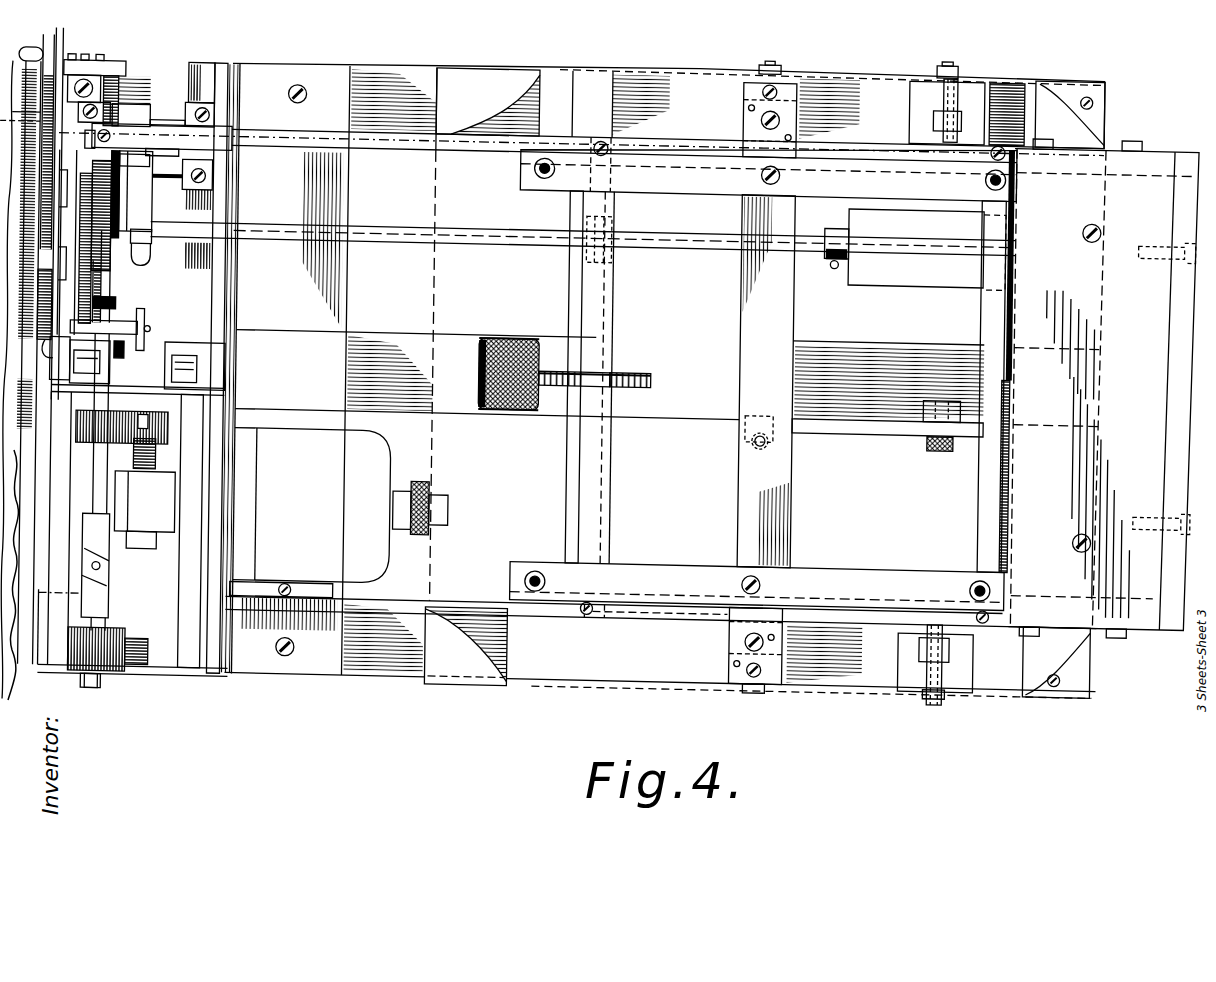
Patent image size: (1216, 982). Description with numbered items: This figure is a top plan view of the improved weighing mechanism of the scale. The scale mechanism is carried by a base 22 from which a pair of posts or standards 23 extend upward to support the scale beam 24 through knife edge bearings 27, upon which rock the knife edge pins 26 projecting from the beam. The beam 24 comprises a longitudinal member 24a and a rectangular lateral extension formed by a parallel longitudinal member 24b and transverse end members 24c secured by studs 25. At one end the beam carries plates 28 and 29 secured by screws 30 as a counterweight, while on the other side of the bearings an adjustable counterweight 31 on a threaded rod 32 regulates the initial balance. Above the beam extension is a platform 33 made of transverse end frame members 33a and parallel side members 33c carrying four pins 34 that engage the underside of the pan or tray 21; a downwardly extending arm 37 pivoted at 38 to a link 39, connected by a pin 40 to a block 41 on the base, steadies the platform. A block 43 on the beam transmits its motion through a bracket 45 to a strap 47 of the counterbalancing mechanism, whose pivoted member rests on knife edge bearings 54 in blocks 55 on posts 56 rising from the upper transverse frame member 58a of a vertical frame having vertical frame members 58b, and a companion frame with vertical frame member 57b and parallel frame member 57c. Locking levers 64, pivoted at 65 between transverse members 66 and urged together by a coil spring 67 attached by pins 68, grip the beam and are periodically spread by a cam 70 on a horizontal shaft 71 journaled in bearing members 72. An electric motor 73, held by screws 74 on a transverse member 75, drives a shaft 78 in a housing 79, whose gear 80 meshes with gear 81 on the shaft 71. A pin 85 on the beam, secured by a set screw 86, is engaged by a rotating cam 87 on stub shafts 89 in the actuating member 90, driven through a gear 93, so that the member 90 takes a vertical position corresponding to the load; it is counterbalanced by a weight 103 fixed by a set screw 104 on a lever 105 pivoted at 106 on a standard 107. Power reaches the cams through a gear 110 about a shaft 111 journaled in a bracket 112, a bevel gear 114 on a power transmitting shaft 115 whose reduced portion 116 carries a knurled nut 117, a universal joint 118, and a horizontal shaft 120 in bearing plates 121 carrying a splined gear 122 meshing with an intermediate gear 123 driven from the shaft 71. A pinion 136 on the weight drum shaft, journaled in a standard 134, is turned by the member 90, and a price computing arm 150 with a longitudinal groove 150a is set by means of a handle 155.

The pan or tray 21 is at (495, 66).
The base 22 is at (396, 675).
The posts or standards 23 is at (940, 87).
The scale beam 24 is at (600, 121).
The longitudinal member 24a is at (411, 150).
The parallel longitudinal member 24b is at (636, 612).
The transverse end members 24c is at (986, 508).
The studs 25 is at (609, 135).
The knife edge pins or bearing members 26 is at (941, 136).
The knife edge bearings 27 is at (944, 123).
The plate 28 is at (1087, 389).
The plate 29 is at (1180, 426).
The screws 30 is at (1170, 240).
The adjustable counterweight 31 is at (510, 332).
The rod 32 is at (650, 364).
The platform 33 is at (739, 193).
The transverse end frame members 33a is at (797, 73).
The parallel side members 33c is at (692, 149).
The pins 34 is at (537, 167).
The downwardly extending arm 37 is at (782, 439).
The pivot 38 is at (750, 449).
The horizontally extending link 39 is at (868, 422).
The pin 40 is at (944, 437).
The block 41 is at (933, 388).
The block 43 is at (148, 178).
The bracket 45 is at (150, 262).
The strap 47 is at (146, 231).
The knife edge bearings 54 is at (212, 372).
The blocks 55 is at (200, 337).
The posts 56 is at (214, 354).
The vertical frame member 57b is at (65, 165).
The parallel frame member 57c is at (116, 284).
The upper transverse frame member 58a is at (236, 270).
The vertical frame member 58b is at (234, 70).
The locking levers 64 is at (184, 104).
The pivot 65 is at (186, 108).
The transverse members 66 is at (185, 86).
The coil spring 67 is at (131, 119).
The pins 68 is at (107, 88).
The cam or disk 70 is at (86, 142).
The horizontal shaft 71 is at (118, 87).
The bearing members 72 is at (118, 60).
The electric motor 73 is at (341, 506).
The screws 74 is at (306, 410).
The transverse member 75 is at (344, 288).
The shaft 78 is at (150, 451).
The housing 79 is at (168, 527).
The gear 80 is at (150, 440).
The gear 81 is at (88, 441).
The pin 85 is at (96, 187).
The set screw 86 is at (112, 138).
The cam 87 is at (110, 262).
The stub shafts 89 is at (120, 214).
The actuating member 90 is at (42, 107).
The gear 93 is at (112, 200).
The weight 103 is at (927, 249).
The set screw 104 is at (836, 256).
The lever 105 is at (544, 240).
The pivot 106 is at (618, 255).
The standard 107 is at (590, 223).
The gear 110 is at (124, 298).
The shaft 111 is at (128, 322).
The bracket 112 is at (148, 318).
The bevel gear 114 is at (128, 345).
The power transmitting shaft 115 is at (116, 488).
The reduced portion 116 is at (126, 296).
The nut 117 is at (122, 306).
The universal joint 118 is at (110, 578).
The horizontal shaft 120 is at (98, 686).
The bearing plates 121 is at (120, 632).
The gear 122 is at (142, 638).
The intermediate gear 123 is at (148, 662).
The standard 134 is at (18, 320).
The pinion 136 is at (40, 332).
The price computing arm 150 is at (48, 46).
The longitudinal groove 150a is at (56, 64).
The handle 155 is at (26, 48).